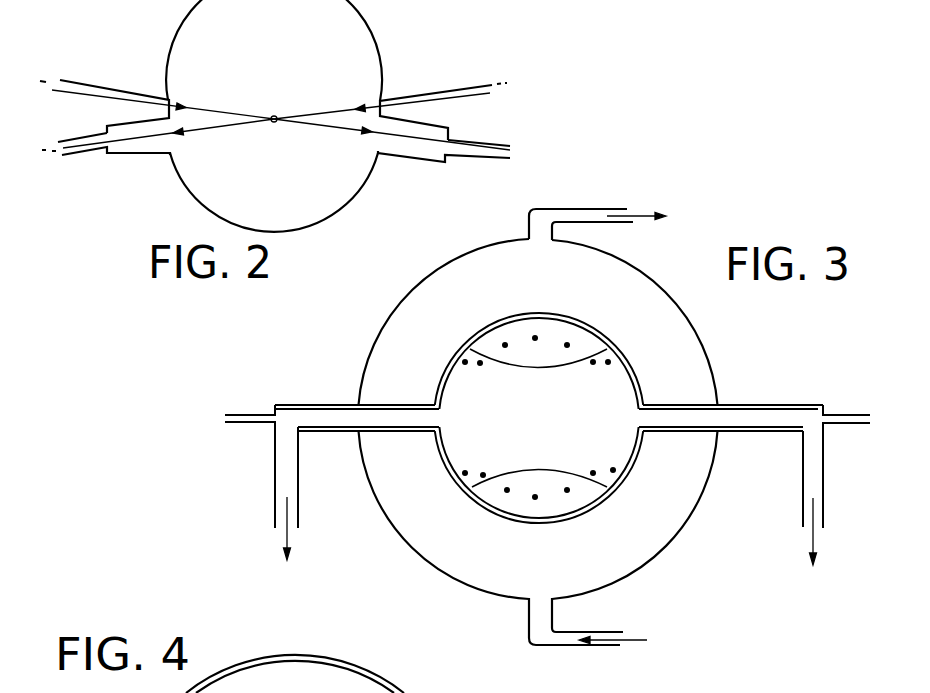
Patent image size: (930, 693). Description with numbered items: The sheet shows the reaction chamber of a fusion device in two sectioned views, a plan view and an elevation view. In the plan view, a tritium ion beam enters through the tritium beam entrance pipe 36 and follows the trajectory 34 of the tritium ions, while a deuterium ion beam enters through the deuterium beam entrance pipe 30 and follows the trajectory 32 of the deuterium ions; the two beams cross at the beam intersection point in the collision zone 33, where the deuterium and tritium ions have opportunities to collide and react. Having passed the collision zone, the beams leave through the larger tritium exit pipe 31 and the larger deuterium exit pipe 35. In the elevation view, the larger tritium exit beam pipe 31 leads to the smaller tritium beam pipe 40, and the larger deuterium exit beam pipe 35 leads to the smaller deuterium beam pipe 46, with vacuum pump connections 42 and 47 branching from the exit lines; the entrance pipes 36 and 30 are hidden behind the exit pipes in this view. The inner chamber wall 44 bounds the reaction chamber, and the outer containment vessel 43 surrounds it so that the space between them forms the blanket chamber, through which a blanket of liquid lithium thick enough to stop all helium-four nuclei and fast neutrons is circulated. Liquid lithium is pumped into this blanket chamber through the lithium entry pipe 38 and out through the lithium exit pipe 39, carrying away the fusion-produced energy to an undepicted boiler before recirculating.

In FIG. 2, the deuterium beam entrance pipe 30 is at (90, 80).
In FIG. 2, the larger tritium exit pipe 31 is at (113, 158).
In FIG. 3, the larger tritium exit pipe 31 is at (313, 404).
In FIG. 2, the trajectory of the deuterium ions 32 is at (205, 109).
In FIG. 2, the collision zone 33 is at (274, 124).
In FIG. 2, the trajectory of the tritium ions 34 is at (325, 111).
In FIG. 2, the larger deuterium exit pipe 35 is at (435, 158).
In FIG. 3, the larger deuterium exit pipe 35 is at (758, 406).
In FIG. 2, the tritium beam entrance pipe 36 is at (432, 91).
In FIG. 3, the lithium entry pipe 38 is at (594, 633).
In FIG. 3, the lithium exit pipe 39 is at (600, 208).
In FIG. 3, the smaller tritium beam pipe 40 is at (241, 414).
In FIG. 3, the vacuum pump connection 42 is at (274, 481).
In FIG. 3, the outer containment vessel 43 is at (397, 530).
In FIG. 3, the inner chamber wall 44 is at (626, 359).
In FIG. 3, the smaller deuterium beam pipe 46 is at (842, 414).
In FIG. 3, the vacuum pump connection 47 is at (802, 500).